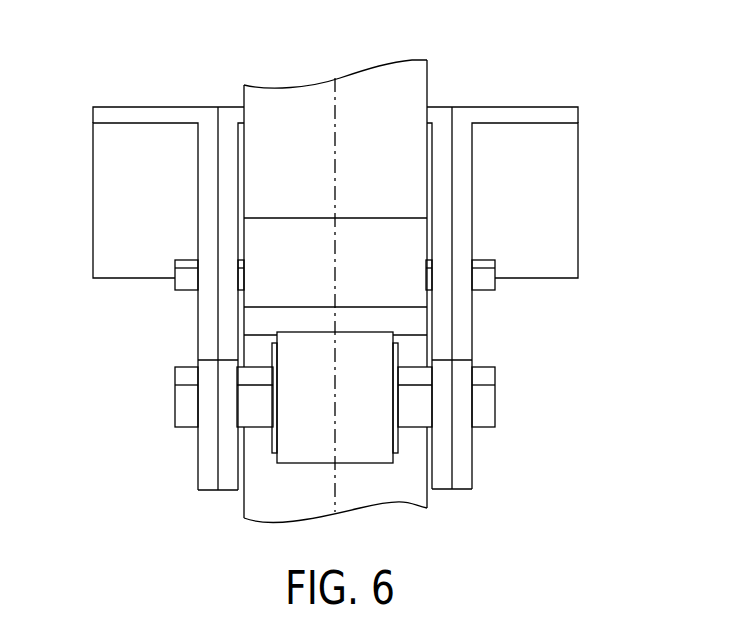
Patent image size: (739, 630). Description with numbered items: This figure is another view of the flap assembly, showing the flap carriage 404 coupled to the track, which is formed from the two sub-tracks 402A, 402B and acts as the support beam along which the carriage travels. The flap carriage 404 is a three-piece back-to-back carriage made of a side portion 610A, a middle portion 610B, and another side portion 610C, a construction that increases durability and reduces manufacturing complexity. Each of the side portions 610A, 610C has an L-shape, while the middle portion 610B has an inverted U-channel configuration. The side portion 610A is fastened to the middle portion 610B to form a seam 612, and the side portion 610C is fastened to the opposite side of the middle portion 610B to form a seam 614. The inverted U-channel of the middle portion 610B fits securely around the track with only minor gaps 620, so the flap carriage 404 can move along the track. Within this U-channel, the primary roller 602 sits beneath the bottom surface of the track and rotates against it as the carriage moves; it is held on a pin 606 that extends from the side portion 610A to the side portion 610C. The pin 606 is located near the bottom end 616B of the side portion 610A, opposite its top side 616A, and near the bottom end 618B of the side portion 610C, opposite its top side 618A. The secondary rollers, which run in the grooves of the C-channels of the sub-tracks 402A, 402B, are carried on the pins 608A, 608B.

The sub-track 402A is at (280, 84).
The sub-track 402B is at (367, 62).
The flap carriage 404 is at (128, 382).
The primary roller 602 is at (363, 464).
The pin 606 is at (495, 403).
The pin 608A is at (175, 291).
The pin 608B is at (495, 291).
The side portion 610A is at (122, 100).
The middle portion 610B is at (236, 88).
The side portion 610C is at (552, 100).
The seam 612 is at (214, 101).
The seam 614 is at (453, 100).
The top side 616A is at (107, 124).
The bottom end 616B is at (198, 489).
The top side 618A is at (578, 118).
The bottom end 618B is at (471, 489).
The gaps 620 is at (236, 162).